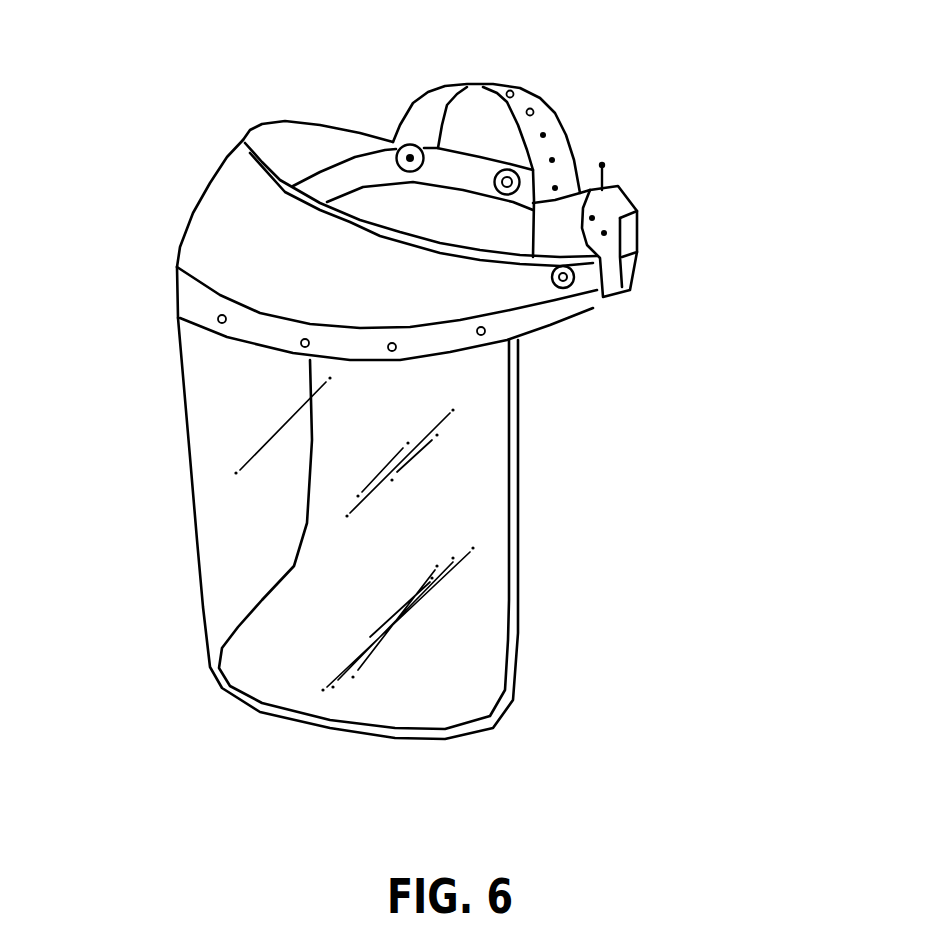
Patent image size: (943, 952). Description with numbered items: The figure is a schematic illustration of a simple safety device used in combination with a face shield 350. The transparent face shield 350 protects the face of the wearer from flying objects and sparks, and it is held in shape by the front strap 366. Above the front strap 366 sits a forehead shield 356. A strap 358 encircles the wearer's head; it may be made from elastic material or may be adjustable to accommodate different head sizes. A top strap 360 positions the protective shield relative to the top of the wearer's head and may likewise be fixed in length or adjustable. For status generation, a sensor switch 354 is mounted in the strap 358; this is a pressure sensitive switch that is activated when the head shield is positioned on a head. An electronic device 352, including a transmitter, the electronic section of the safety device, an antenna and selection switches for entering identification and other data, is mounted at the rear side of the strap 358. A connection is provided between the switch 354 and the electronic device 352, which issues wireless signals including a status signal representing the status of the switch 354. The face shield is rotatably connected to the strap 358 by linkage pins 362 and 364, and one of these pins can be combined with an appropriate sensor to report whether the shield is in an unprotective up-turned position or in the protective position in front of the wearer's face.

The face shield 350 is at (355, 601).
The electronic device 352 is at (655, 228).
The sensor switch 354 is at (516, 164).
The forehead shield 356 is at (218, 240).
The strap 358 is at (613, 280).
The top strap 360 is at (501, 92).
The linkage pin 362 is at (568, 288).
The linkage pin 364 is at (409, 151).
The front strap 366 is at (192, 288).